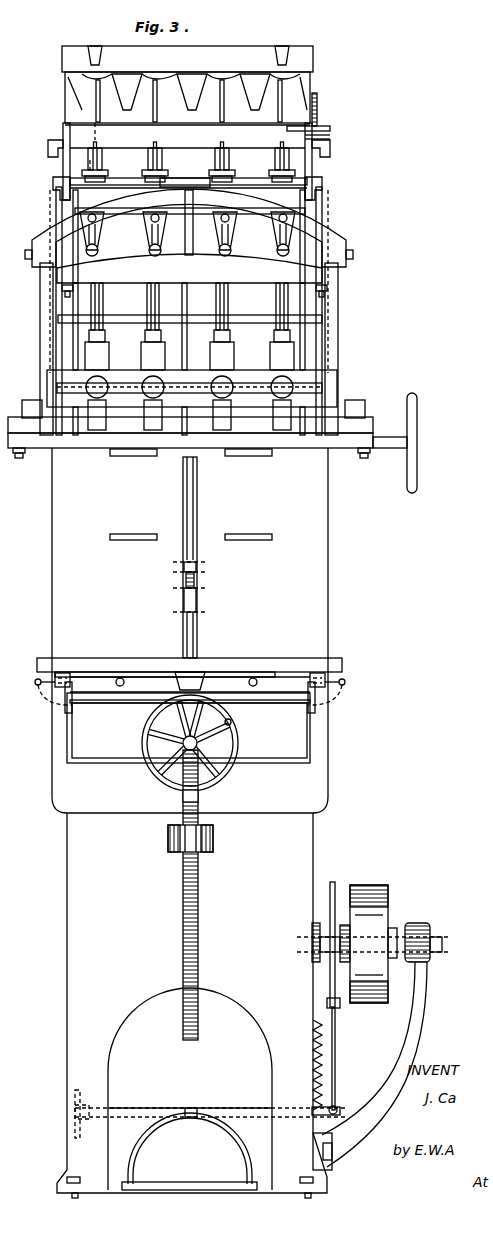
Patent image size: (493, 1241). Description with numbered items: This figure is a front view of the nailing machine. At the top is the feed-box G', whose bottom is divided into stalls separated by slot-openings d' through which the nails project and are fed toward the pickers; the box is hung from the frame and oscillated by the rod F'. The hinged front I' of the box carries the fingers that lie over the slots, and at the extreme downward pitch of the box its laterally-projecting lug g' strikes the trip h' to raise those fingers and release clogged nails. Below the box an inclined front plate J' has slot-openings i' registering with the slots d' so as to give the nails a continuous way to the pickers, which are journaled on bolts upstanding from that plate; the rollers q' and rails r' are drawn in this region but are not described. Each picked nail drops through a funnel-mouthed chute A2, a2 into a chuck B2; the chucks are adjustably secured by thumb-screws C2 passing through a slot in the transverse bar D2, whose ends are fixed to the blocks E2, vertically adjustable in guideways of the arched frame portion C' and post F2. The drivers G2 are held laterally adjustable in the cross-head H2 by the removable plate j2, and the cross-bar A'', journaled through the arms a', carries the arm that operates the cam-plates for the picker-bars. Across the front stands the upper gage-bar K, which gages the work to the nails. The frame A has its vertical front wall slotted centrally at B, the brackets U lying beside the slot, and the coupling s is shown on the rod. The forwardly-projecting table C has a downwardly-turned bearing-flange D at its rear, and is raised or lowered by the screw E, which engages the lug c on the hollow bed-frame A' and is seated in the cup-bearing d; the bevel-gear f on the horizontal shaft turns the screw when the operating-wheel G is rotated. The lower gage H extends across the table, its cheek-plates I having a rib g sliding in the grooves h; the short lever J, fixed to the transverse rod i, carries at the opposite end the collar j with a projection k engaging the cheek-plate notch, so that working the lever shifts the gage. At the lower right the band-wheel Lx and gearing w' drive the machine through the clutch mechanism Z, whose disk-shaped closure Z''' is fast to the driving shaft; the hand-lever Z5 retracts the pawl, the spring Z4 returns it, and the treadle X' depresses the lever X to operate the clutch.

The feed-box G' is at (174, 85).
The slot-openings d' is at (119, 98).
The cup-bearing d is at (225, 98).
The front of the box I' is at (189, 161).
The laterally-projecting lug g' is at (318, 112).
The trip h' is at (328, 138).
The slot-openings i' is at (99, 161).
The inclined front plate J' is at (188, 162).
The upper gage-bar K is at (165, 182).
The rollers q' is at (189, 194).
The rails r' is at (167, 194).
The cam-plates C' is at (189, 311).
The chute a2 is at (155, 216).
The chute A2 is at (100, 240).
The cross-head H2 is at (189, 268).
The plate j2 is at (236, 276).
The rod F' is at (173, 293).
The drivers G2 is at (104, 303).
The cross-bar A'' is at (190, 359).
The arms a' is at (189, 319).
The transverse bar D2 is at (116, 378).
The chucks B2 is at (228, 355).
The frame post F2 is at (338, 368).
The blocks E2 is at (46, 386).
The thumb-screws C2 is at (104, 398).
The brackets U is at (118, 458).
The slot B is at (198, 463).
The coupling s is at (200, 557).
The frame A is at (190, 630).
The lower gage H is at (248, 638).
The longitudinal rib g is at (191, 684).
The grooves h is at (190, 684).
The cheek-plates I is at (188, 687).
The table C is at (182, 683).
The transverse rod i is at (190, 711).
The projection k is at (194, 701).
The collar j is at (63, 713).
The short lever J is at (340, 723).
The bevel-gear f is at (198, 745).
The bearing-flange D is at (188, 728).
The operating-wheel G is at (194, 745).
The lug c is at (167, 836).
The screw E is at (196, 895).
The hollow bed-frame A' is at (201, 1005).
The disk-shaped closure Z''' is at (333, 937).
The band-wheel Lx is at (366, 890).
The gearing w' is at (383, 942).
The clutch mechanism Z is at (288, 979).
The hand-lever Z5 is at (336, 1050).
The spring Z4 is at (322, 1071).
The lever X is at (190, 1089).
The treadle X' is at (189, 1151).